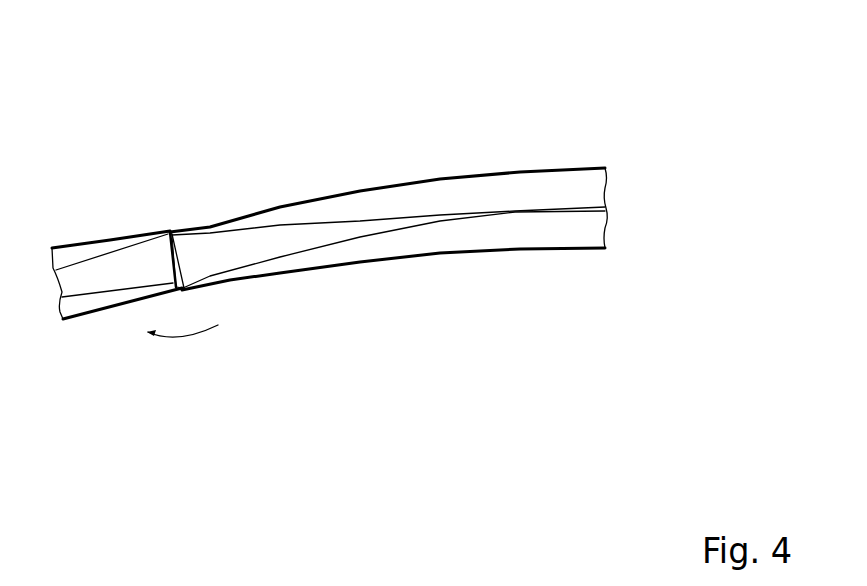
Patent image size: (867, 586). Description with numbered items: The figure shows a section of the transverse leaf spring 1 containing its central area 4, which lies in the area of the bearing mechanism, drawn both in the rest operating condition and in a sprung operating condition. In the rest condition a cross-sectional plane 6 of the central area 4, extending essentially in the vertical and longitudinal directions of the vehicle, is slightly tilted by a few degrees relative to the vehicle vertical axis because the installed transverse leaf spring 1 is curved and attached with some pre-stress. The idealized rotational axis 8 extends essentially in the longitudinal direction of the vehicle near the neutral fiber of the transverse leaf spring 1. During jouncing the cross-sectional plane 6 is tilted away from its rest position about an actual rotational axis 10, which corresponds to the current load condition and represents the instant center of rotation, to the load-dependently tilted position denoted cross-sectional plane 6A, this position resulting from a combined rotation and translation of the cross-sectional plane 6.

The transverse leaf spring 1 is at (554, 124).
The central area 4 is at (156, 176).
The cross-sectional plane 6 is at (376, 337).
The cross-sectional plane in spring operating condition 6A is at (117, 347).
The rotational axis 8 is at (105, 145).
The actual rotational axis 10 is at (190, 146).